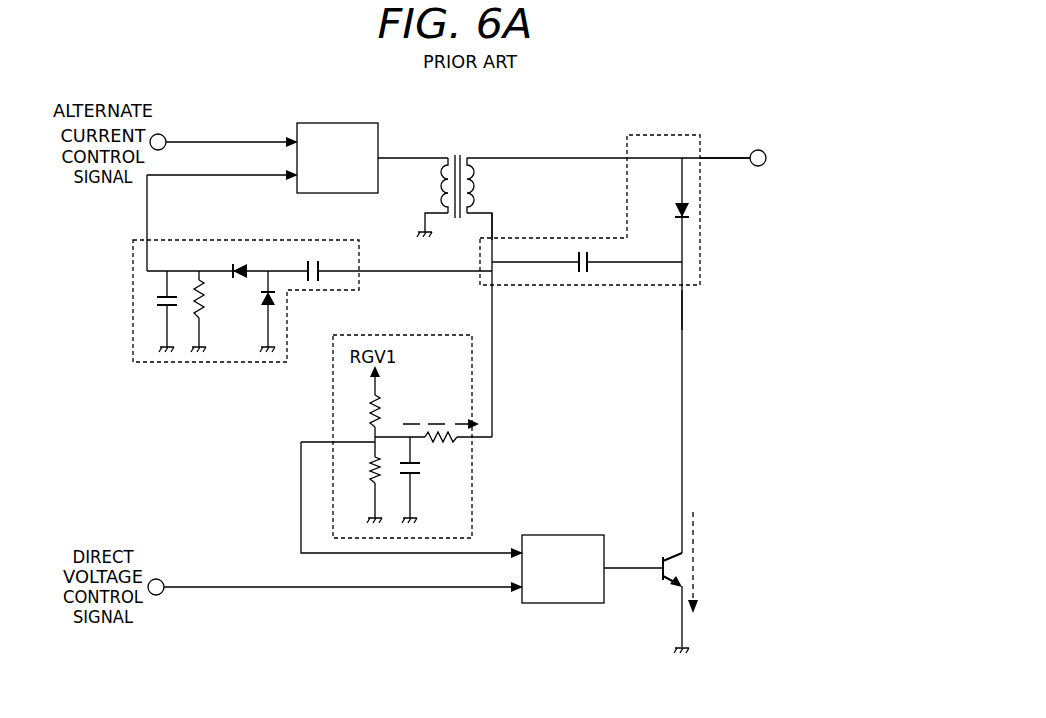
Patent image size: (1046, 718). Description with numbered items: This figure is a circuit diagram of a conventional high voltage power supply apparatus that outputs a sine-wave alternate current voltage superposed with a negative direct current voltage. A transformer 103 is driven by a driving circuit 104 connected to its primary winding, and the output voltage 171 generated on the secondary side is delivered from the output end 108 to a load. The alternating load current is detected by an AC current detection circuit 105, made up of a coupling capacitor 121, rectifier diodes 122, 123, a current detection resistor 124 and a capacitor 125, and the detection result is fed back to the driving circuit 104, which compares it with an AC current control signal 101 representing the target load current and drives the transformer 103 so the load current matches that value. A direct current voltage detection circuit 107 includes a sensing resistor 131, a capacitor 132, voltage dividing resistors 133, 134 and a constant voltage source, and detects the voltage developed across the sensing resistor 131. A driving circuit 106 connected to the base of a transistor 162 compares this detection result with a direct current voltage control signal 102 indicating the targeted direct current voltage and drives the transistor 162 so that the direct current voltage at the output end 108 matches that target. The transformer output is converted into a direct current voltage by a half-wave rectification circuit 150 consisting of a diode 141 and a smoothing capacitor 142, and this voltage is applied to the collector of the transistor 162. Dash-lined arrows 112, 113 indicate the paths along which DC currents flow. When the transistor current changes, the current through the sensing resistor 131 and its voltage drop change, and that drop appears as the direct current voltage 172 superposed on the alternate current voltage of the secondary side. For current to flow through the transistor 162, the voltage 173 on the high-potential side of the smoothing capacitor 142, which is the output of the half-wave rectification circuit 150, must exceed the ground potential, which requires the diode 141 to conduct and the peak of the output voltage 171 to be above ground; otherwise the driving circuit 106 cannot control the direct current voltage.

The AC current control signal 101 is at (162, 135).
The direct current voltage control signal 102 is at (160, 580).
The transformer 103 is at (456, 153).
The driving circuit 104 is at (337, 123).
The AC current detection circuit 105 is at (187, 240).
The driving circuit 106 is at (565, 535).
The direct current voltage detection circuit 107 is at (426, 335).
The output end 108 is at (761, 150).
The dash-lined arrow 112 is at (437, 419).
The dash-lined arrow 113 is at (696, 520).
The coupling capacitor 121 is at (312, 259).
The rectifier diode 122 is at (262, 302).
The rectifier diode 123 is at (238, 262).
The current detection resistor 124 is at (196, 312).
The capacitor 125 is at (163, 305).
The sensing resistor 131 is at (445, 445).
The capacitor 132 is at (414, 478).
The voltage dividing resistor 133 is at (372, 400).
The voltage dividing resistor 134 is at (372, 470).
The diode 141 is at (678, 220).
The smoothing capacitor 142 is at (583, 250).
The half-wave rectification circuit 150 is at (596, 287).
The transistor 162 is at (668, 556).
The output voltage Vout 171 is at (720, 156).
The direct current voltage Vdc 172 is at (493, 224).
The voltage Va 173 is at (684, 316).